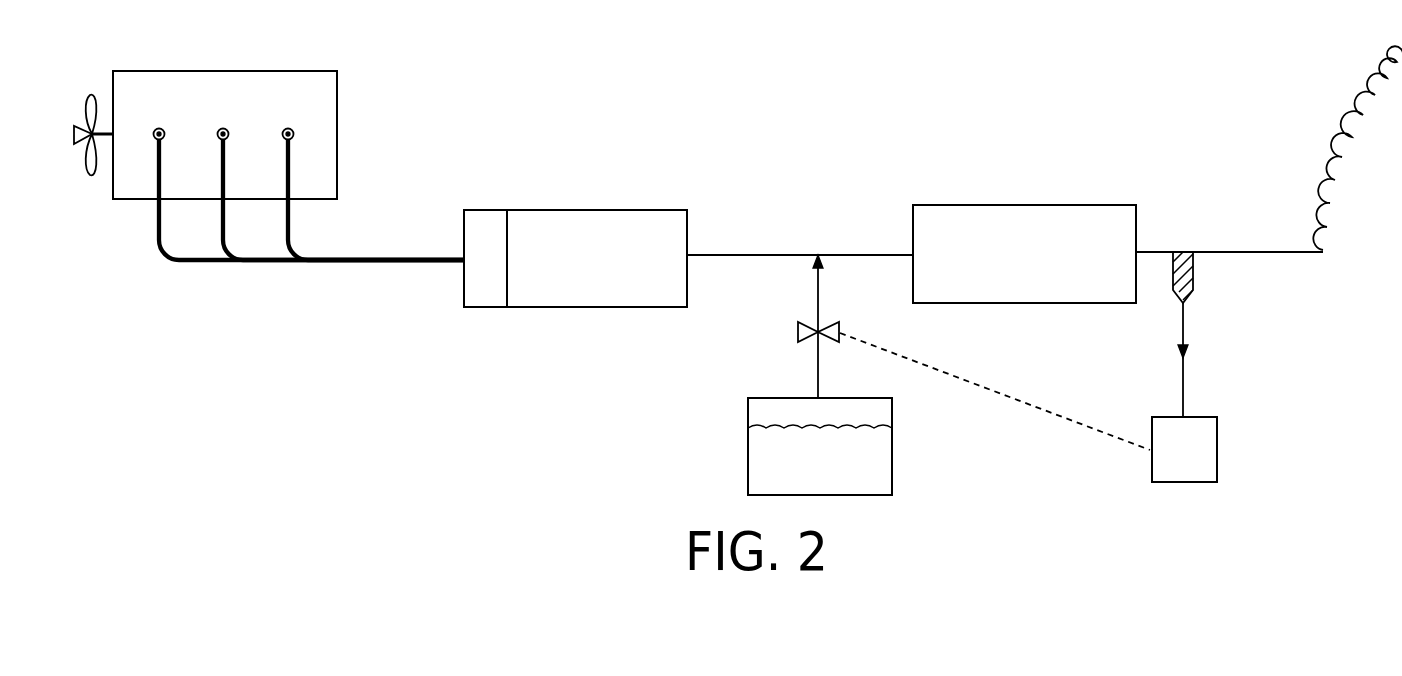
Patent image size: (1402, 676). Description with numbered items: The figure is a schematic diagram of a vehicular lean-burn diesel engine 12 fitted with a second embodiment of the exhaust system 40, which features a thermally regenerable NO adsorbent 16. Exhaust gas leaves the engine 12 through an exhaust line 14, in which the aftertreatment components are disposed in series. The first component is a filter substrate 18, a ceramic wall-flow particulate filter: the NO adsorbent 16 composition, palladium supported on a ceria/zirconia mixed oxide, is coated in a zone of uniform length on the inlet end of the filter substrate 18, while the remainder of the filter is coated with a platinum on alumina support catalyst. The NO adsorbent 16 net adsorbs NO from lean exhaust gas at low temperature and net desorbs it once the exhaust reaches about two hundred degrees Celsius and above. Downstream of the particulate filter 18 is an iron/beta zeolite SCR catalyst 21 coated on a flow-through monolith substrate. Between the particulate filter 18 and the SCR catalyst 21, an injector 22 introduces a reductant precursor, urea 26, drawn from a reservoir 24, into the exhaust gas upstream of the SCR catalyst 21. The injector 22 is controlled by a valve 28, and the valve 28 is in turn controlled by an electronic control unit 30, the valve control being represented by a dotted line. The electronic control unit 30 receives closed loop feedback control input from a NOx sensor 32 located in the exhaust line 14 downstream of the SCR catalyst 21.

The diesel engine 12 is at (209, 106).
The exhaust line 14 is at (380, 263).
The NO adsorbent 16 is at (476, 208).
The filter substrate 18 is at (586, 208).
The SCR catalyst 21 is at (1021, 205).
The injector 22 is at (818, 252).
The reservoir 24 is at (748, 447).
The urea 26 is at (805, 470).
The valve 28 is at (798, 332).
The electronic control unit 30 is at (1168, 462).
The NOx sensor 32 is at (1182, 250).
The exhaust system 40 is at (940, 84).